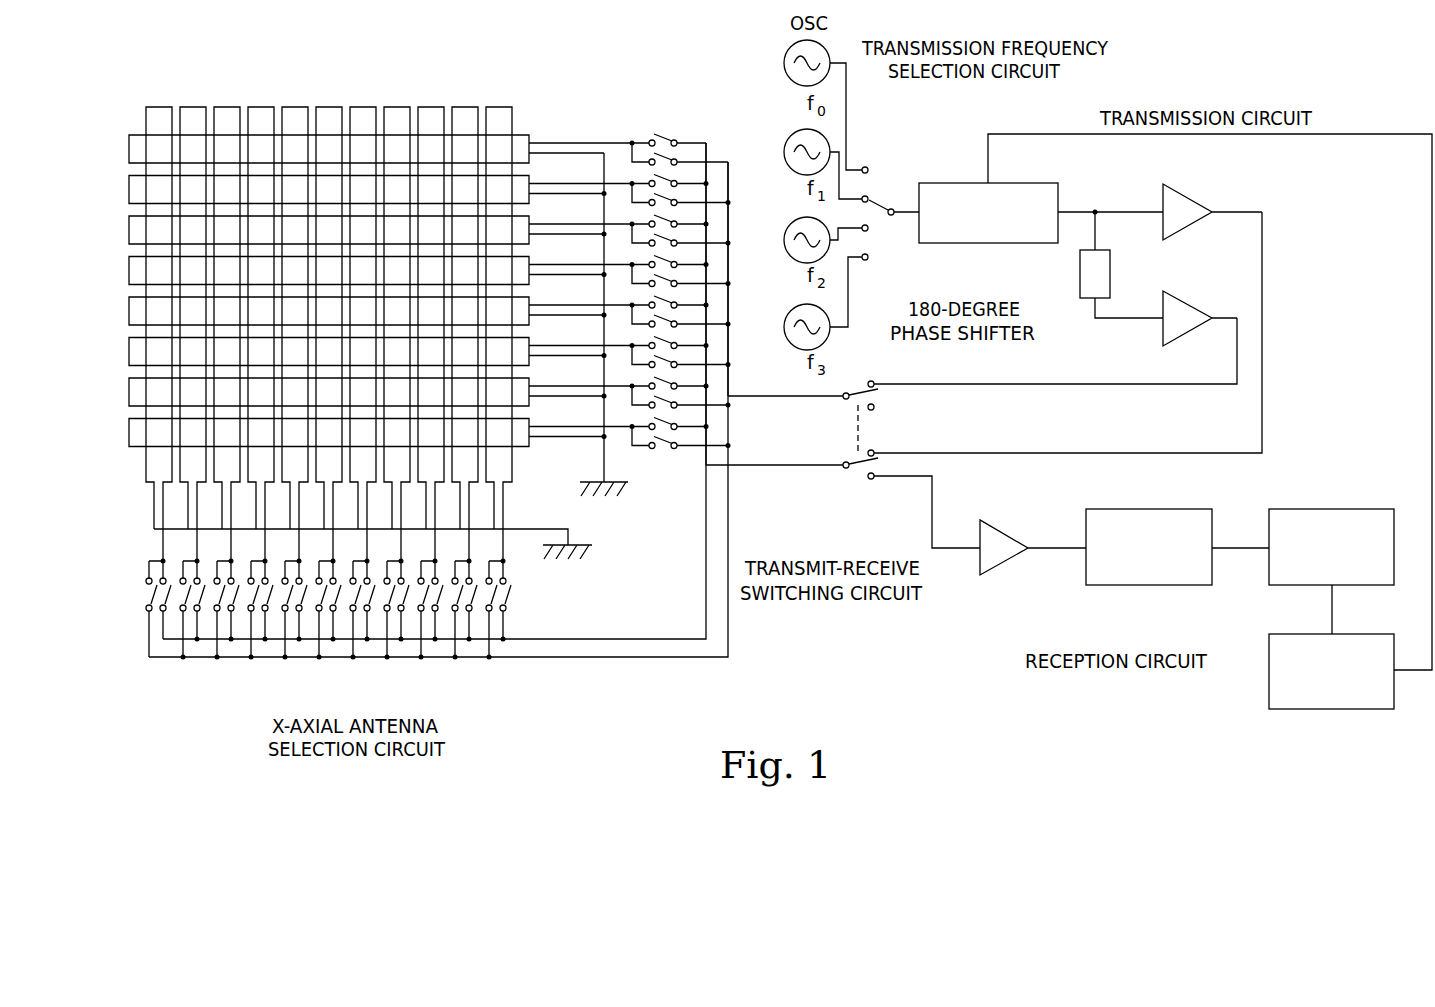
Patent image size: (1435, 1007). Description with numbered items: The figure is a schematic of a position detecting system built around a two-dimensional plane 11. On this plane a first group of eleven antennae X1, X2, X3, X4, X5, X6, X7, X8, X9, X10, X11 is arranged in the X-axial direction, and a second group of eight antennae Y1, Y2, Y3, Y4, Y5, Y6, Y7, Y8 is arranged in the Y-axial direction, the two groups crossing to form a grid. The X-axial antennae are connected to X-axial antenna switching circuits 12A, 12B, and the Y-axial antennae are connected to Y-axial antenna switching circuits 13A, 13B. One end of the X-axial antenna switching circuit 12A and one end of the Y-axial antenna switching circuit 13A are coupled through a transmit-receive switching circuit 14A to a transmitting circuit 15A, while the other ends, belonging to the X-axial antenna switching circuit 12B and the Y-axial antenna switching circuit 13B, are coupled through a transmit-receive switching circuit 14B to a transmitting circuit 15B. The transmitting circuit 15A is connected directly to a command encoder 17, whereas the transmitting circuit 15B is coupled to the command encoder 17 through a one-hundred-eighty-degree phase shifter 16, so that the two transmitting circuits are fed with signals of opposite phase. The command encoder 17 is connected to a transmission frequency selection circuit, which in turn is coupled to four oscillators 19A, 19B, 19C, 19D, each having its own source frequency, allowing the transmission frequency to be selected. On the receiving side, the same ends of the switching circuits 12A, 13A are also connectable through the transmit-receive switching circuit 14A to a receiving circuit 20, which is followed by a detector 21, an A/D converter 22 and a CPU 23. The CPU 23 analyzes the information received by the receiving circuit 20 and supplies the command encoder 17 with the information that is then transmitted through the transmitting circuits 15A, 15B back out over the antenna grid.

The two-dimensional plane 11 is at (277, 89).
The X-axial antenna switching circuit 12A is at (246, 641).
The X-axial antenna switching circuit 12B is at (469, 658).
The Y-axial antenna switching circuit 13A is at (707, 152).
The Y-axial antenna switching circuit 13B is at (731, 172).
The transmit-receive switching circuit 14A is at (855, 478).
The transmit-receive switching circuit 14B is at (848, 408).
The transmitting circuit 15A is at (1185, 192).
The transmitting circuit 15B is at (1185, 300).
The 180-degree phase shifter 16 is at (1075, 277).
The command encoder 17 is at (970, 245).
The oscillator 19A is at (827, 34).
The oscillator 19B is at (800, 130).
The oscillator 19C is at (800, 266).
The oscillator 19D is at (800, 352).
The receiving circuit 20 is at (978, 566).
The detector 21 is at (1137, 587).
The A/D converter 22 is at (1320, 508).
The CPU 23 is at (1328, 710).
The antenna X1 is at (151, 484).
The antenna X2 is at (183, 497).
The antenna X3 is at (217, 481).
The antenna X4 is at (251, 497).
The antenna X5 is at (285, 481).
The antenna X6 is at (319, 497).
The antenna X7 is at (353, 481).
The antenna X8 is at (387, 497).
The antenna X9 is at (421, 481).
The antenna X10 is at (455, 497).
The antenna X11 is at (513, 486).
The antenna Y1 is at (529, 447).
The antenna Y2 is at (529, 405).
The antenna Y3 is at (529, 364).
The antenna Y4 is at (529, 324).
The antenna Y5 is at (529, 284).
The antenna Y6 is at (529, 243).
The antenna Y7 is at (529, 202).
The antenna Y8 is at (529, 141).